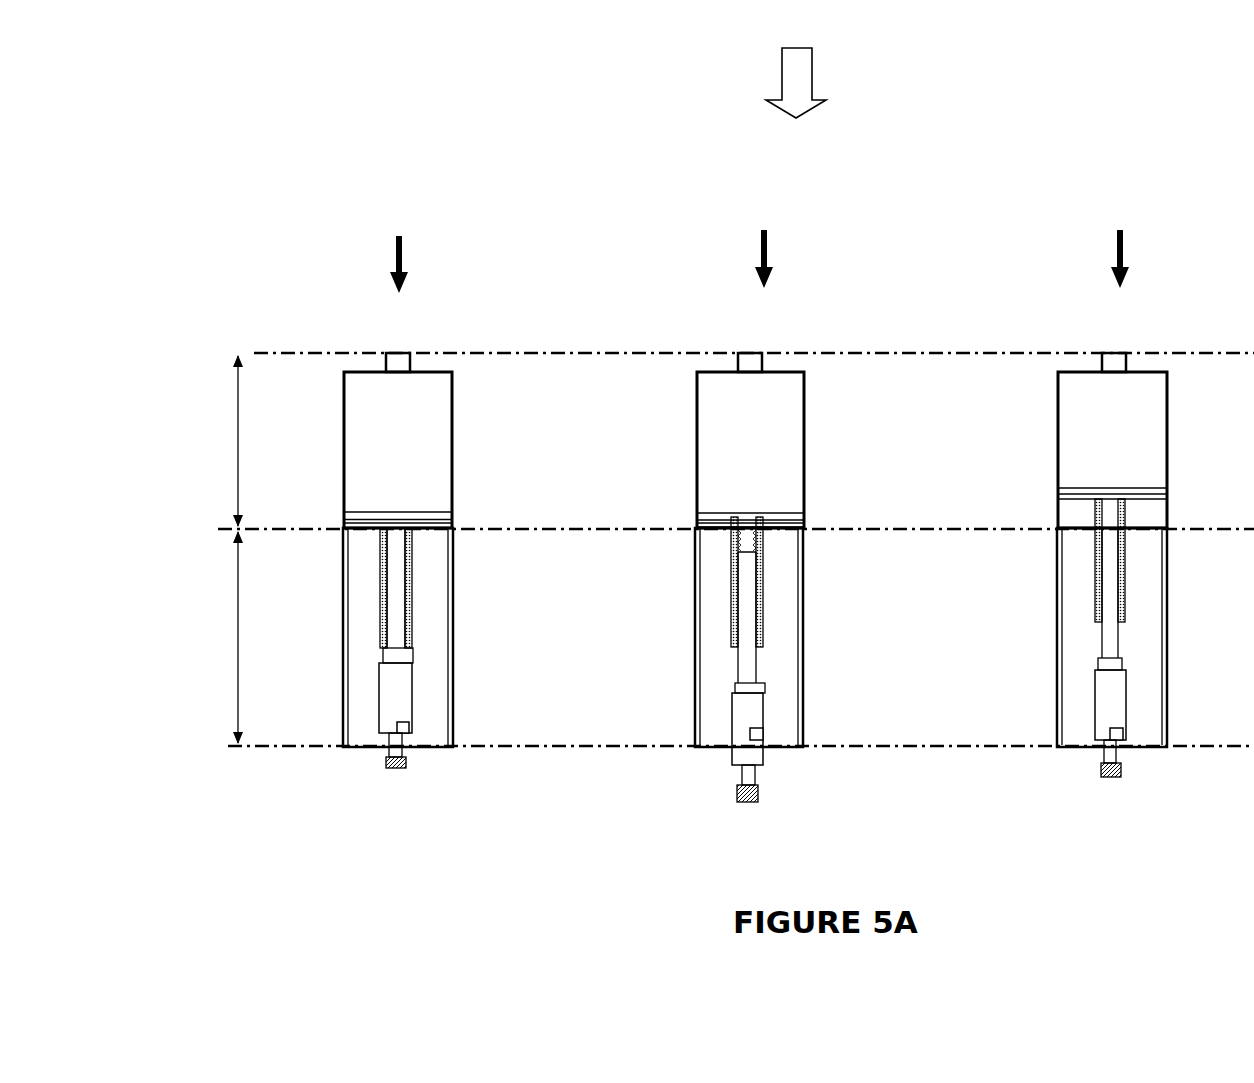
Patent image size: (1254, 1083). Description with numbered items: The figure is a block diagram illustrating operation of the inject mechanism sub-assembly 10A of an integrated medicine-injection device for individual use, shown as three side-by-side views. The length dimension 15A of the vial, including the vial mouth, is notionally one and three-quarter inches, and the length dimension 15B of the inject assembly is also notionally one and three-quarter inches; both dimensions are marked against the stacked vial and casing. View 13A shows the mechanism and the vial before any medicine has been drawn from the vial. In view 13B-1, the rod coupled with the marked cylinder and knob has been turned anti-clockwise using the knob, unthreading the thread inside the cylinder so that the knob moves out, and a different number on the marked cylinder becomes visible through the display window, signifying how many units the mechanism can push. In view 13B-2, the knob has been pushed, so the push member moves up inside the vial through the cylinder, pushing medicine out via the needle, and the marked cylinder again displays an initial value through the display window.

The inject mechanism sub-assembly 10A is at (820, 66).
The view 13A is at (419, 256).
The view 13B-1 is at (794, 251).
The view 13B-2 is at (1150, 251).
The length dimension of the vial 15A is at (217, 441).
The length dimension of the inject assembly 15B is at (217, 637).